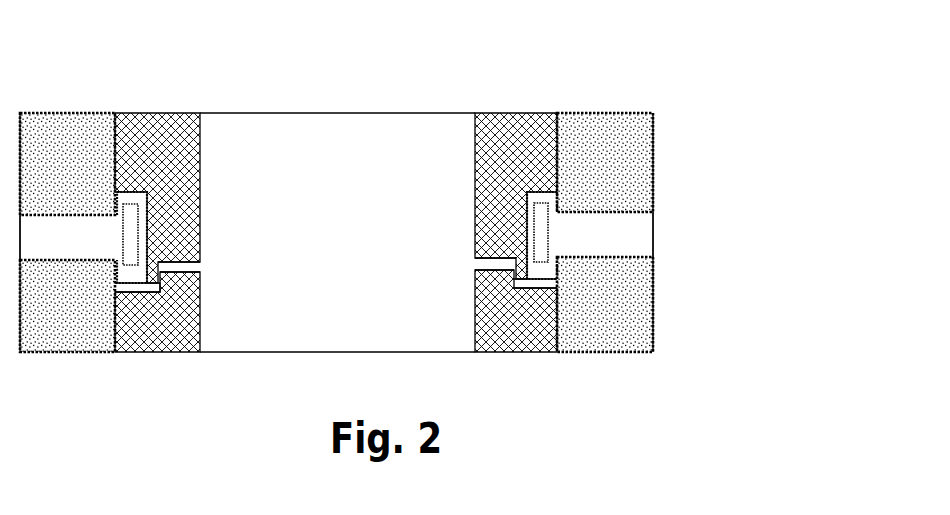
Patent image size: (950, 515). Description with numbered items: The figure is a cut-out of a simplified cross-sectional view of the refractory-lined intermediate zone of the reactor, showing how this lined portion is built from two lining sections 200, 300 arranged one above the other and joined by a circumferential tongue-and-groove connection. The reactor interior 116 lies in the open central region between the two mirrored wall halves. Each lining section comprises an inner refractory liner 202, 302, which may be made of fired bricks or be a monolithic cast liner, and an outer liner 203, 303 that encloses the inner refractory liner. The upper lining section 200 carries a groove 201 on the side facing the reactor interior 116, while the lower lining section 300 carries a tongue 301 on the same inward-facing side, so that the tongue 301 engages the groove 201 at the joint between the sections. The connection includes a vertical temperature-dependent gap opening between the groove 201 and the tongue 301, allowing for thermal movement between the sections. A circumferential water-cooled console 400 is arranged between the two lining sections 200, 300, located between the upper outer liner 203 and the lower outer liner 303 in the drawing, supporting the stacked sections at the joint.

The cavity / receiving space 116 is at (320, 170).
The upper lining section 200 is at (439, 198).
The groove 201 is at (462, 264).
The inner refractory liner 202 is at (537, 170).
The outer liner 203 is at (598, 133).
The lower lining section 300 is at (440, 308).
The tongue 301 is at (487, 282).
The inner refractory liner 302 is at (540, 338).
The outer liner 303 is at (603, 302).
The water-cooled console 400 is at (606, 235).